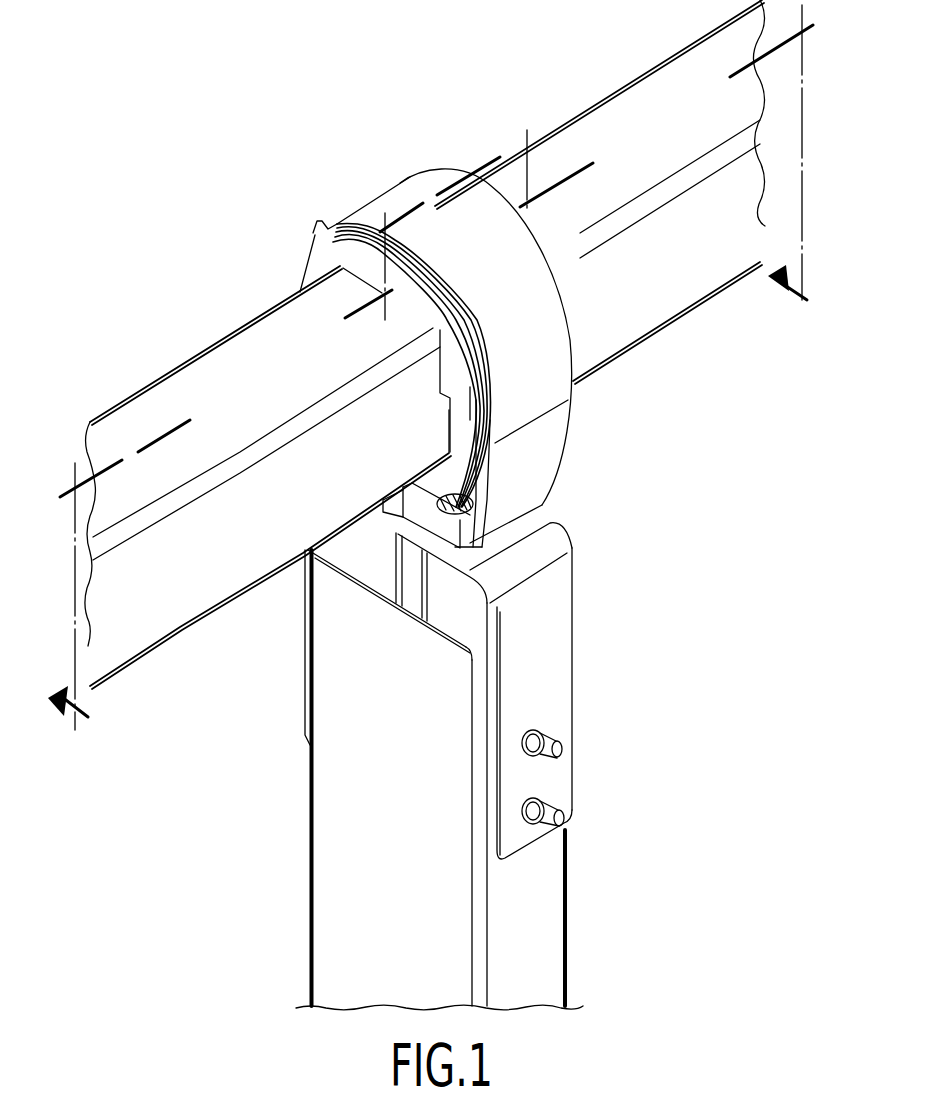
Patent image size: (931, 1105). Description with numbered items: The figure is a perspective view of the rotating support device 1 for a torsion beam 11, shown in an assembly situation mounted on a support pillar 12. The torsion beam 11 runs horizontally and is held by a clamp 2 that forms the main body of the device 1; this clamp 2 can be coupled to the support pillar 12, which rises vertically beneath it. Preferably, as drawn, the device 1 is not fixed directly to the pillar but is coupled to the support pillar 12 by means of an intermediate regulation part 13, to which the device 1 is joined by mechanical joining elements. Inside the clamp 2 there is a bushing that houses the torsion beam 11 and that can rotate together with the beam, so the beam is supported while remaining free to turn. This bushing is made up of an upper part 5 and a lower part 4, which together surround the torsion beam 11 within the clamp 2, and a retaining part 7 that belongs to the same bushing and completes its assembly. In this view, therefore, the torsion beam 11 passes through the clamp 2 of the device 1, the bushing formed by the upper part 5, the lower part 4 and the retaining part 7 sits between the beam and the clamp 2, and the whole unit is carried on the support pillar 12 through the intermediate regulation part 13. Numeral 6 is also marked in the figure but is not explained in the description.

The rotating support device 1 is at (283, 253).
The torsion beam 11 is at (240, 370).
The support pillar 12 is at (368, 638).
The intermediate regulation part 13 is at (537, 645).
The clamp 2 is at (487, 407).
The lower part 4 is at (460, 477).
The upper part 5 is at (511, 370).
The groove 6 is at (408, 265).
The retaining part 7 is at (480, 327).